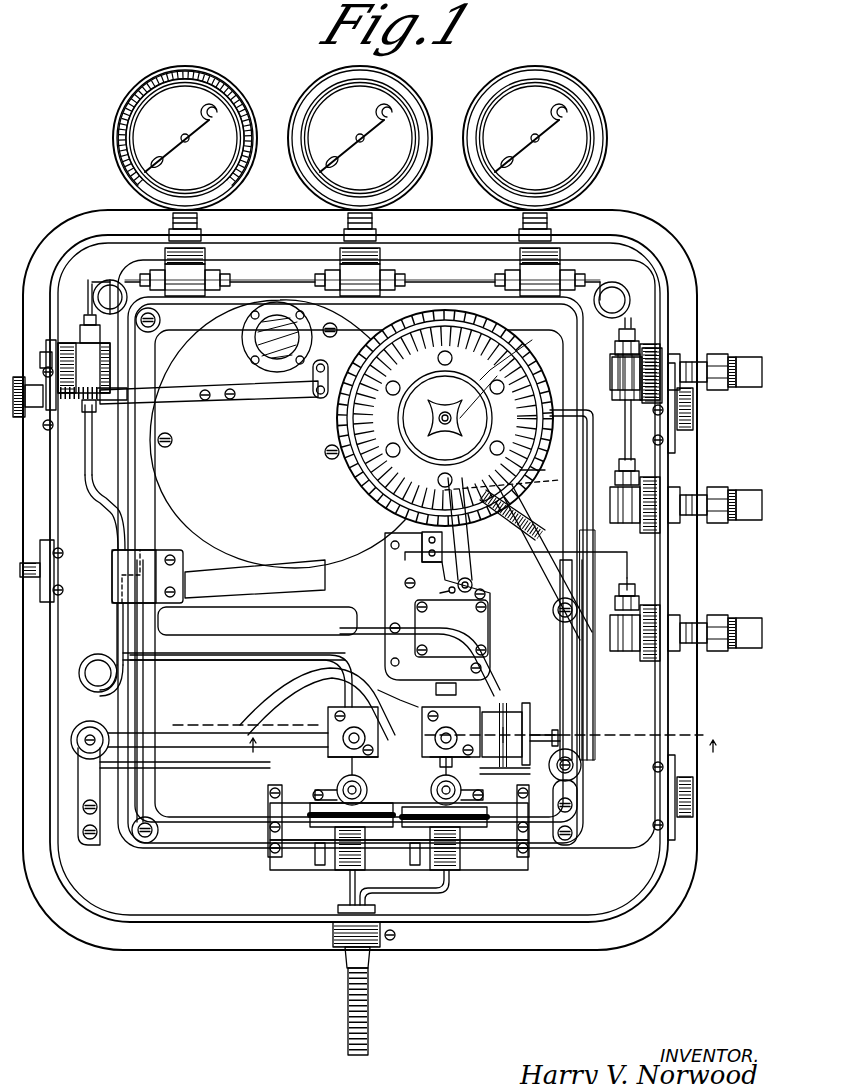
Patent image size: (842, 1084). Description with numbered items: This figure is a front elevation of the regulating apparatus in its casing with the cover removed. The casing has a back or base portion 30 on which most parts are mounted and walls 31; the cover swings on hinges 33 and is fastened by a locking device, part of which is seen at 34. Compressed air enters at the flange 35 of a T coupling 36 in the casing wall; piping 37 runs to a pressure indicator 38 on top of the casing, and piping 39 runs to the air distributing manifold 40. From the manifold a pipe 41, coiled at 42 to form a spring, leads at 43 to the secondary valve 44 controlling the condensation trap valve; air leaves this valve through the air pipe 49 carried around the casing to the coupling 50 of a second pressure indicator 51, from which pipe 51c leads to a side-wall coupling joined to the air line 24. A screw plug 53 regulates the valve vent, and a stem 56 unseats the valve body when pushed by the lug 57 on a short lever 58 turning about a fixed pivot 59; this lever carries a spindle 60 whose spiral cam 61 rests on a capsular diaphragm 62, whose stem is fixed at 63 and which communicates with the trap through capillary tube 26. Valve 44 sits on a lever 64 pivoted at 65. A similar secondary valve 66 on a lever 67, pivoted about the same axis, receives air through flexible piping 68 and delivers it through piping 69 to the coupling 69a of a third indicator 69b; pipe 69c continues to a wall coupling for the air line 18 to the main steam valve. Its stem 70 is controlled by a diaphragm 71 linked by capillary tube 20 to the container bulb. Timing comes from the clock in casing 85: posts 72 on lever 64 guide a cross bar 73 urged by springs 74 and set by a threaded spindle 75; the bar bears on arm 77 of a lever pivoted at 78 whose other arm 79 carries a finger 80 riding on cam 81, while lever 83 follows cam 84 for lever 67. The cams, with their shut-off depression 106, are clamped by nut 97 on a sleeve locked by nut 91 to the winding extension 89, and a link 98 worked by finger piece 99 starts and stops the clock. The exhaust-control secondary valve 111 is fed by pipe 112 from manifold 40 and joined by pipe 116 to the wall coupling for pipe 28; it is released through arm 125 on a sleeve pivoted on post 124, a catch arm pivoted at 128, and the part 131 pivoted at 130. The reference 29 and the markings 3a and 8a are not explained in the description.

The pressure indicator 38 is at (122, 133).
The pressure indicator 51 is at (440, 172).
The pressure indicator 69b is at (580, 147).
The coupling 50 is at (370, 265).
The coupling 69a is at (520, 295).
The pipe 69c is at (594, 309).
The piping 37 is at (92, 292).
The flange 35 is at (45, 350).
The T coupling 36 is at (88, 360).
The finger piece 99 is at (22, 420).
The piping 39 is at (88, 440).
The air pipe 49 is at (215, 665).
The casing 85 is at (225, 540).
The link 98 is at (268, 395).
The nut 97 is at (445, 418).
The nut 91 is at (437, 445).
The threaded and squared extension 89 is at (452, 418).
The pointer 8a is at (370, 515).
The cam or templet 84 is at (572, 352).
The cam or templet 81 is at (598, 372).
The pipe 51c is at (625, 440).
The finger 80 is at (572, 408).
The lever arm 79 is at (615, 683).
The lever 83 is at (597, 645).
The pipe 116 is at (545, 520).
The depression 106 is at (540, 500).
The part 131 is at (513, 475).
The air line 18 is at (775, 360).
The air line 24 is at (755, 500).
The pipe 28 is at (755, 640).
The mounting nut 33 is at (693, 418).
The pivot 130 is at (480, 522).
The arm 125 is at (430, 527).
The stationary post 124 is at (390, 560).
The pivot 128 is at (423, 595).
The secondary valve 111 is at (478, 630).
The air distributing manifold 40 is at (112, 562).
The locking device 34 is at (54, 610).
The pipe 41 is at (116, 625).
The coil 42 is at (90, 655).
The pivot 65 is at (85, 722).
The capsular diaphragm 71 is at (262, 798).
The lever 67 is at (275, 760).
The pipe 112 is at (183, 640).
The piping 69 is at (150, 492).
The lever 64 is at (300, 690).
The flexible piping 68 is at (330, 628).
The secondary valve 66 is at (325, 752).
The secondary valve 44 is at (405, 705).
The connection 43 is at (446, 683).
The screw plug 53 is at (404, 731).
The cross bar 73 is at (505, 712).
The posts 72 is at (526, 703).
The springs 74 is at (470, 712).
The threaded spindle 75 is at (590, 712).
The lever arm 77 is at (580, 760).
The pivot 78 is at (573, 766).
The fixed pivot 59 is at (560, 795).
The stem 70 is at (338, 780).
The spindle 60 is at (430, 792).
The spiral cam 61 is at (440, 780).
The lug or abutment 57 is at (430, 768).
The stem 56 is at (475, 768).
The short lever 58 is at (480, 820).
The capsular diaphragm 62 is at (470, 868).
The capillary tube 20 is at (348, 880).
The support 63 is at (468, 880).
The capillary tube 26 is at (428, 888).
The section line 3a is at (456, 738).
The case 29 is at (115, 952).
The back or base portion 30 is at (112, 892).
The walls 31 is at (205, 922).